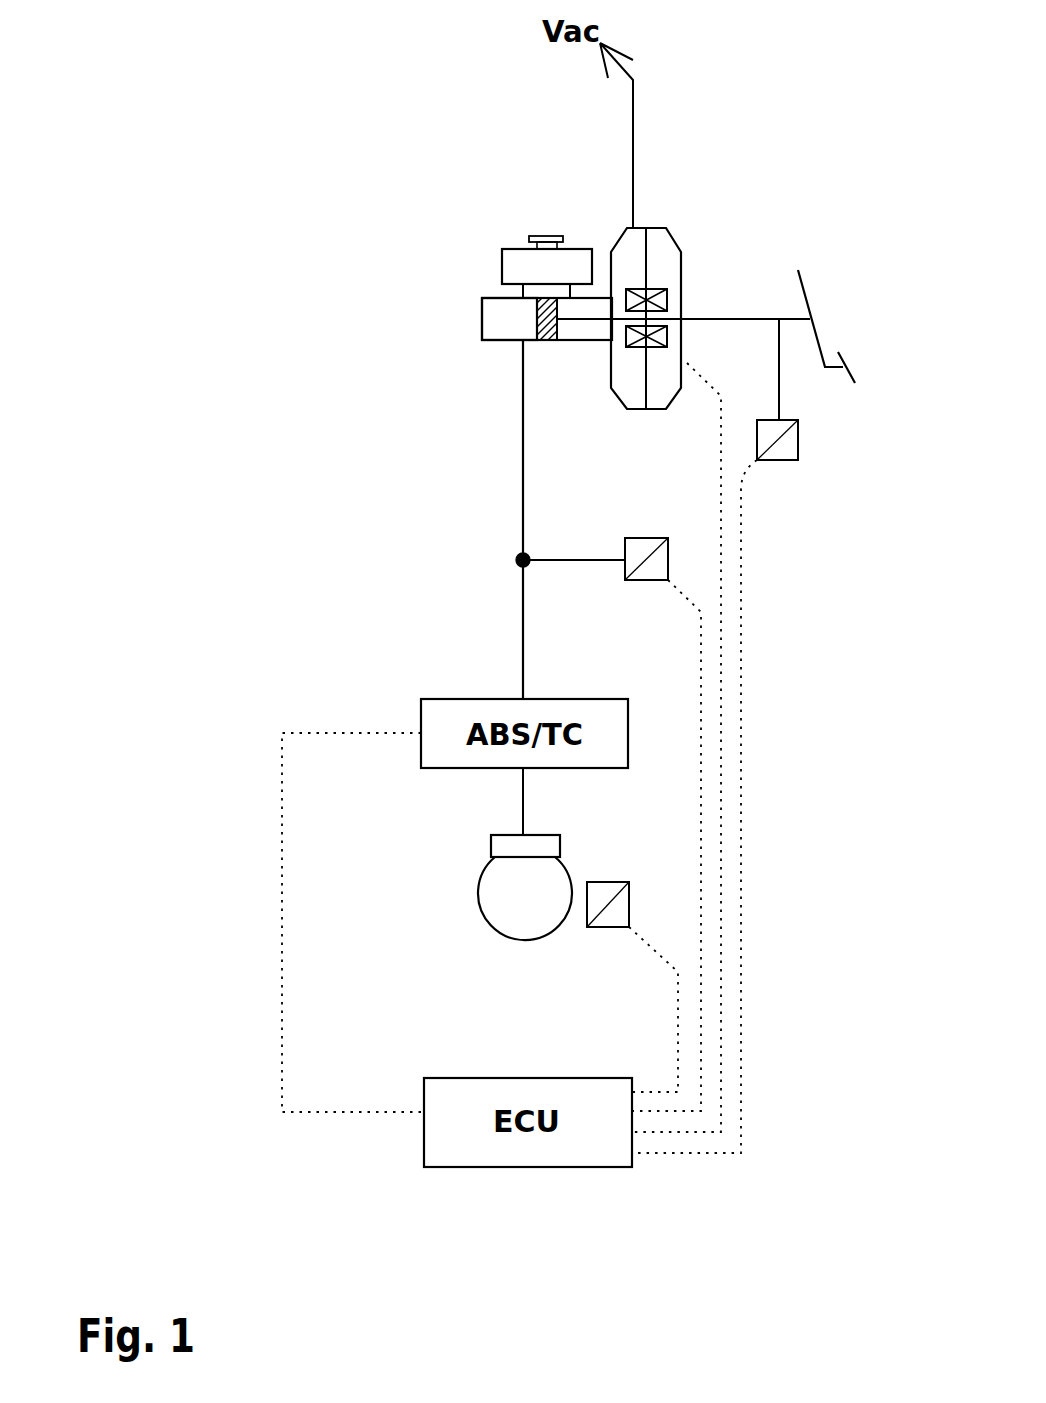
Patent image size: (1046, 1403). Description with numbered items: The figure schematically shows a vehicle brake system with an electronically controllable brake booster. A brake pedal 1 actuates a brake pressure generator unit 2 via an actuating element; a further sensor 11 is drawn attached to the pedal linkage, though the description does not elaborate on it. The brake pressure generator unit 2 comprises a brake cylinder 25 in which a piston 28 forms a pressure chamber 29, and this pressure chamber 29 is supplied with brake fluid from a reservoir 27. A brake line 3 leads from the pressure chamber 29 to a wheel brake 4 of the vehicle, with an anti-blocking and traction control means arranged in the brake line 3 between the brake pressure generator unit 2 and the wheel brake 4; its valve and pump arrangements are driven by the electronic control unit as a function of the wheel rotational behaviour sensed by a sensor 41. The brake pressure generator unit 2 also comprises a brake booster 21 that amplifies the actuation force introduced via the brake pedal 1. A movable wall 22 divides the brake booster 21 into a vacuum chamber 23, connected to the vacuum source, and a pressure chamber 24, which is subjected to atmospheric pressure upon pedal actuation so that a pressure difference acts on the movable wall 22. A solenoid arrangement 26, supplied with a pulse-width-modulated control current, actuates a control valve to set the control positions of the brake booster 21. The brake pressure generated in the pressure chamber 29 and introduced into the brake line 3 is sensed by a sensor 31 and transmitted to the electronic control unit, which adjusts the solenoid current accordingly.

The brake pedal 1 is at (850, 353).
The brake pressure generator unit 2 is at (440, 80).
The brake line 3 is at (522, 430).
The wheel brake 4 is at (555, 843).
The pedal travel sensor 11 is at (787, 448).
The brake booster 21 is at (705, 240).
The movable wall 22 is at (649, 230).
The vacuum chamber 23 is at (632, 390).
The pressure chamber 24 is at (658, 388).
The brake cylinder 25 is at (492, 295).
The solenoid arrangement 26 is at (680, 252).
The reservoir 27 is at (522, 263).
The piston 28 is at (535, 315).
The pressure chamber 29 is at (502, 312).
The sensor 31 is at (627, 537).
The sensor 41 is at (608, 883).